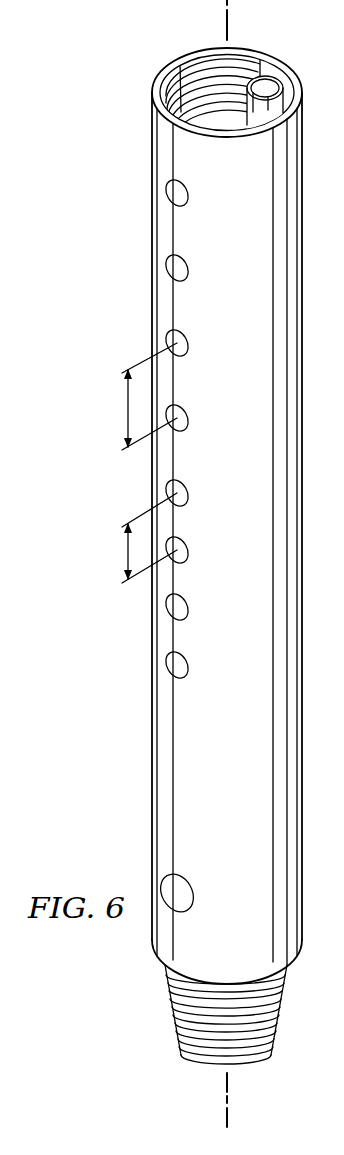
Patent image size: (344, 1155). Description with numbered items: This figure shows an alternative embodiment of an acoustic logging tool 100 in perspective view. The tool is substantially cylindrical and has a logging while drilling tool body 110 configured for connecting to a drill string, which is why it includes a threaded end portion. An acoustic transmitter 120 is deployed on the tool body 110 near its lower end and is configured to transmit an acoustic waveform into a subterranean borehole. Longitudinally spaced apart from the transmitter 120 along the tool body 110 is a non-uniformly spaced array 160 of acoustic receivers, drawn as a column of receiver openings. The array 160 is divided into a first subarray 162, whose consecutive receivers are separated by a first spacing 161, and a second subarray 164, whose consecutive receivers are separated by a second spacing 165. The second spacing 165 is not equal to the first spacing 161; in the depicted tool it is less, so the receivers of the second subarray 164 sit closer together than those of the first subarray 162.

The acoustic logging tool 100 is at (78, 73).
The downhole tool body 110 is at (152, 812).
The acoustic transmitter 120 is at (181, 878).
The non-uniformly spaced array of acoustic receivers 160 is at (53, 691).
The first spacing 161 is at (127, 410).
The first subarray 162 is at (202, 181).
The second subarray 164 is at (203, 475).
The second spacing 165 is at (127, 552).